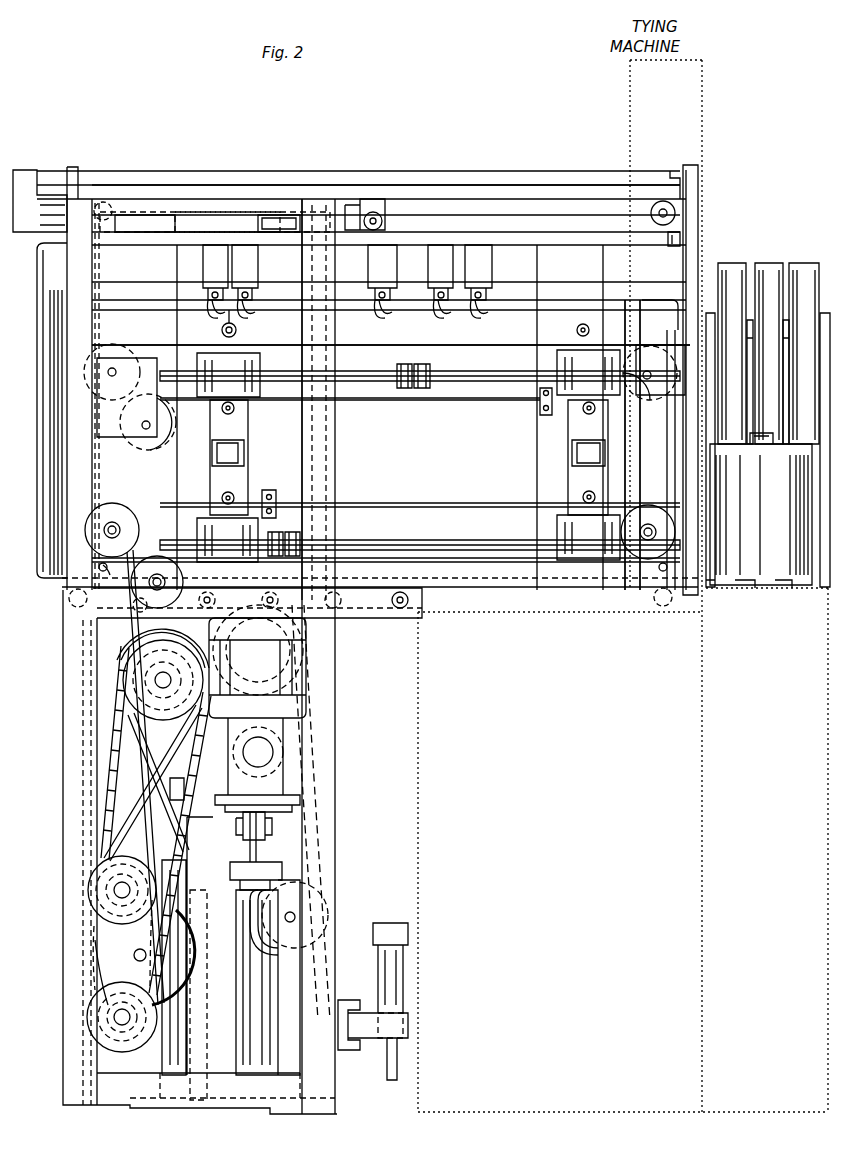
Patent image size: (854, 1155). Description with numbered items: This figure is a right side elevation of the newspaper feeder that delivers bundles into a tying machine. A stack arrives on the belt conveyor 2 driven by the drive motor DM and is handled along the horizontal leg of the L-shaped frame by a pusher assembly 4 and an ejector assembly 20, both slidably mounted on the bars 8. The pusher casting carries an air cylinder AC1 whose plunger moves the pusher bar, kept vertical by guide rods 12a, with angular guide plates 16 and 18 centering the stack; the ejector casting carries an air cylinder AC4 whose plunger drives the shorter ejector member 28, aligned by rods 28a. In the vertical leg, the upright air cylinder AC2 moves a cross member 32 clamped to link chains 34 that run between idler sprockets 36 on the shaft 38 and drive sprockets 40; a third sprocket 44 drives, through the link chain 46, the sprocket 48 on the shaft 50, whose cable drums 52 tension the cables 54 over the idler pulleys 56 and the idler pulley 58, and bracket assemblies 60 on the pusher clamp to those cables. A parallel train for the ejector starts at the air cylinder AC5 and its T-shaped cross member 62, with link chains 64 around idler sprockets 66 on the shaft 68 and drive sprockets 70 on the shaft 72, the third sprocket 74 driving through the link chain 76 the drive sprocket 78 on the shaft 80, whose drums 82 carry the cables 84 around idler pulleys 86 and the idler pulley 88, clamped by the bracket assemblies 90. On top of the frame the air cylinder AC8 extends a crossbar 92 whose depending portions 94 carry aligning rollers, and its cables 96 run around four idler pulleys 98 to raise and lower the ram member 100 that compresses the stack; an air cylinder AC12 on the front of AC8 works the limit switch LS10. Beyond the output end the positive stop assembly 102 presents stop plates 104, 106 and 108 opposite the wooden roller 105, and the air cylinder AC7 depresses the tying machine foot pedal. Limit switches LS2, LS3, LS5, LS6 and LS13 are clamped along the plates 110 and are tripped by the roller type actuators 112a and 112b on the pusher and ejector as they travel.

The belt conveyor 2 is at (62, 606).
The pusher assembly 4 is at (250, 428).
The bars 8 is at (496, 370).
The guide rods 12a is at (236, 410).
The angular guide plate 16 is at (172, 338).
The angular guide plate 18 is at (334, 322).
The ejector assembly 20 is at (568, 460).
The ejector member 28 is at (636, 452).
The rods 28a is at (597, 410).
The cross member 32 is at (272, 830).
The link chains 34 is at (318, 756).
The idler sprockets 36 is at (328, 892).
The shaft 38 is at (296, 917).
The drive sprockets 40 is at (290, 660).
The third sprocket 44 is at (302, 640).
The link chain 46 is at (130, 814).
The sprocket 48 is at (98, 868).
The shaft 50 is at (114, 890).
The cable drums 52 is at (96, 940).
The cables 54 is at (406, 502).
The idler pulleys 56 is at (136, 525).
The idler pulley 58 is at (648, 562).
The bracket assemblies 60 is at (278, 492).
The T-shaped cross member 62 is at (168, 790).
The link chains 64 is at (118, 716).
The idler sprockets 66 is at (100, 984).
The shaft 68 is at (134, 956).
The drive sprockets 70 is at (128, 670).
The shaft 72 is at (155, 680).
The third sprocket 74 is at (136, 736).
The link chain 76 is at (133, 690).
The drive sprocket 78 is at (100, 1028).
The shaft 80 is at (114, 1016).
The drums 82 is at (110, 1044).
The cables 84 is at (420, 355).
The idler pulleys 86 is at (100, 348).
The idler pulley 88 is at (636, 355).
The bracket assemblies 90 is at (540, 404).
The crossbar 92 is at (378, 212).
The depending portions 94 is at (364, 205).
The cables 96 is at (545, 199).
The idler pulleys 98 is at (104, 202).
The ram member 100 is at (680, 240).
The positive stop assembly 102 is at (784, 202).
The stop plate 104 is at (770, 265).
The wooden roller 105 is at (760, 585).
The stop plate 106 is at (732, 265).
The stop plate 108 is at (806, 265).
The plates 110 is at (128, 240).
The roller type actuator 112a is at (238, 330).
The roller type actuator 112b is at (585, 325).
The air cylinder AC1 is at (240, 452).
The air cylinder AC2 is at (256, 1075).
The air cylinder AC4 is at (576, 450).
The air cylinder AC5 is at (180, 1075).
The air cylinder AC7 is at (404, 972).
The air cylinder AC8 is at (38, 195).
The air cylinder AC12 is at (286, 222).
The drive motor DM is at (298, 700).
The limit switch LS2 is at (212, 255).
The limit switch LS3 is at (244, 255).
The limit switch LS5 is at (480, 255).
The limit switch LS6 is at (392, 255).
The limit switch LS10 is at (186, 222).
The limit switch LS13 is at (442, 255).